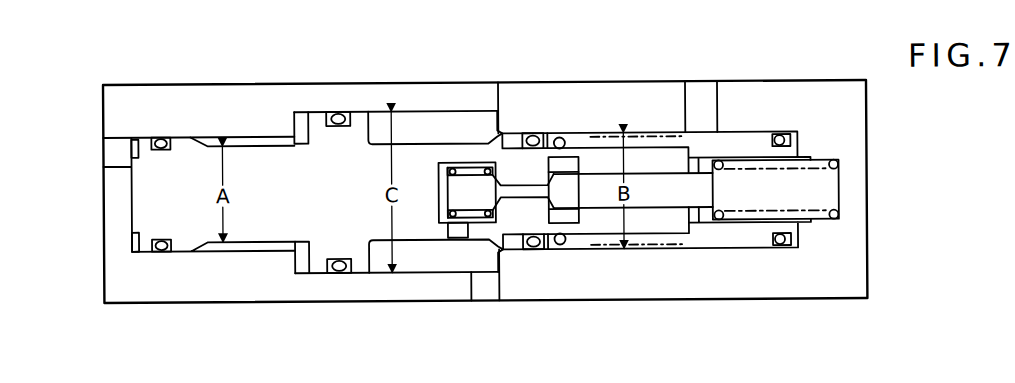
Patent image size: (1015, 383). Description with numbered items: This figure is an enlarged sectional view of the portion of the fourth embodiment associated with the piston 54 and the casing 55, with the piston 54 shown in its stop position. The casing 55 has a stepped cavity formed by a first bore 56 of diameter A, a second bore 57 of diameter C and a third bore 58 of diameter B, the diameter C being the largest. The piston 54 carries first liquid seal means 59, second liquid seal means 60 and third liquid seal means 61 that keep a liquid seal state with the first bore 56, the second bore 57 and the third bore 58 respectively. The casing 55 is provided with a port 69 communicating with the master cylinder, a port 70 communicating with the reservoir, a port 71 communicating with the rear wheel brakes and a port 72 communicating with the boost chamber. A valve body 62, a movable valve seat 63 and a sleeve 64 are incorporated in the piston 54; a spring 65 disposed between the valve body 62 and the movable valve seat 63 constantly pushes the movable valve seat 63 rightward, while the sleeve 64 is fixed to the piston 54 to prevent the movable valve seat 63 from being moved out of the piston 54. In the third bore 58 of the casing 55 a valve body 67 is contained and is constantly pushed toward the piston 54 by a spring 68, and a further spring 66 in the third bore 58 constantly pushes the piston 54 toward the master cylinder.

The piston 54 is at (287, 223).
The casing 55 is at (230, 112).
The first bore 56 is at (258, 112).
The second bore 57 is at (425, 113).
The third bore 58 is at (583, 135).
The first liquid seal means 59 is at (170, 253).
The second liquid seal means 60 is at (338, 275).
The third liquid seal means 61 is at (532, 254).
The valve body 62 is at (440, 213).
The movable valve seat 63 is at (502, 170).
The sleeve 64 is at (567, 161).
The spring 65 is at (460, 165).
The spring 66 is at (580, 254).
The valve body 67 is at (652, 198).
The spring 68 is at (738, 221).
The port 69 is at (113, 158).
The port 70 is at (304, 90).
The port 71 is at (478, 289).
The port 72 is at (697, 100).